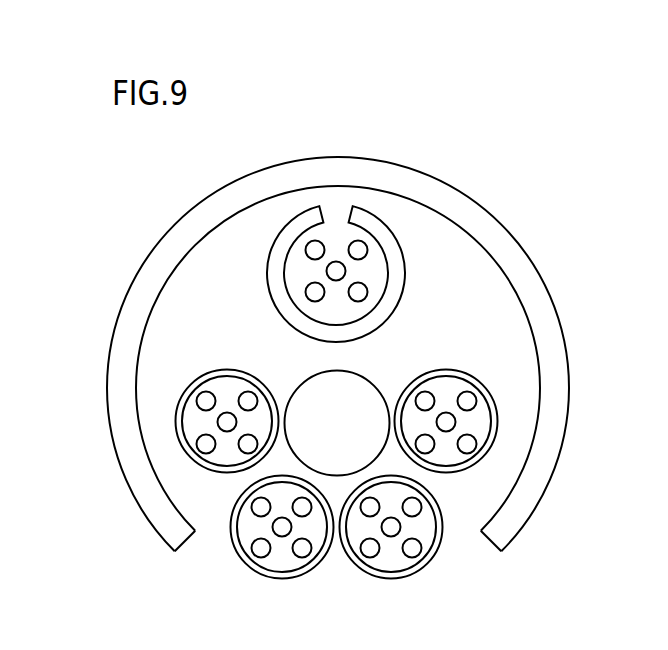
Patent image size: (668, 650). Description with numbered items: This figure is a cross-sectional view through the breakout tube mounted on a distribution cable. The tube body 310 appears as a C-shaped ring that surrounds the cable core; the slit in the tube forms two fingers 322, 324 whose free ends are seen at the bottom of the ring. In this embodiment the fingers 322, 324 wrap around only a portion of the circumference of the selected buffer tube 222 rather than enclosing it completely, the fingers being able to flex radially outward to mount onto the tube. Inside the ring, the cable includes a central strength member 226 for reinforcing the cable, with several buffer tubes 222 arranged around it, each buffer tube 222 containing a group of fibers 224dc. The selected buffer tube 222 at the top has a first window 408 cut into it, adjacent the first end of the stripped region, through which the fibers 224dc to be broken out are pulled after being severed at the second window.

The tube body 310 is at (560, 320).
The finger 322 is at (160, 523).
The finger 324 is at (508, 529).
The first window 408 is at (328, 194).
The fiber 224dc is at (360, 247).
The central strength member 226 is at (362, 443).
The buffer tube 222 is at (255, 567).